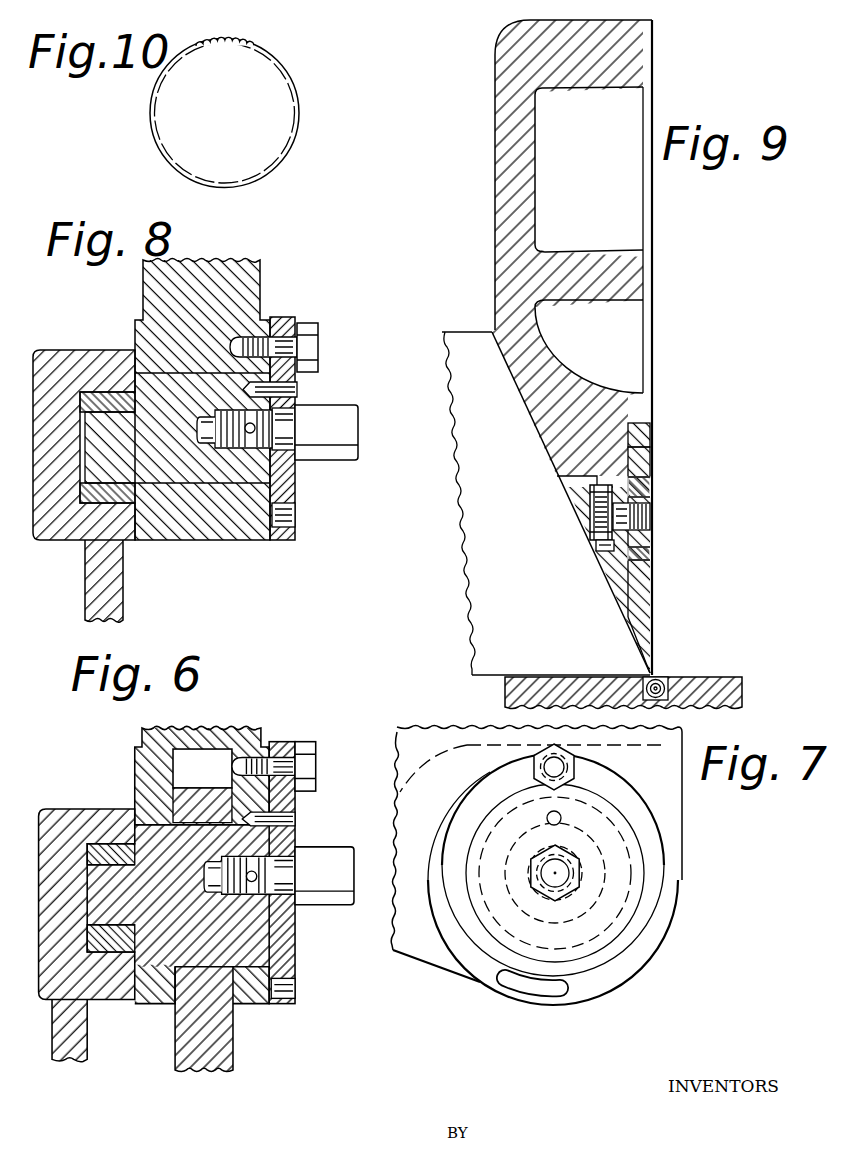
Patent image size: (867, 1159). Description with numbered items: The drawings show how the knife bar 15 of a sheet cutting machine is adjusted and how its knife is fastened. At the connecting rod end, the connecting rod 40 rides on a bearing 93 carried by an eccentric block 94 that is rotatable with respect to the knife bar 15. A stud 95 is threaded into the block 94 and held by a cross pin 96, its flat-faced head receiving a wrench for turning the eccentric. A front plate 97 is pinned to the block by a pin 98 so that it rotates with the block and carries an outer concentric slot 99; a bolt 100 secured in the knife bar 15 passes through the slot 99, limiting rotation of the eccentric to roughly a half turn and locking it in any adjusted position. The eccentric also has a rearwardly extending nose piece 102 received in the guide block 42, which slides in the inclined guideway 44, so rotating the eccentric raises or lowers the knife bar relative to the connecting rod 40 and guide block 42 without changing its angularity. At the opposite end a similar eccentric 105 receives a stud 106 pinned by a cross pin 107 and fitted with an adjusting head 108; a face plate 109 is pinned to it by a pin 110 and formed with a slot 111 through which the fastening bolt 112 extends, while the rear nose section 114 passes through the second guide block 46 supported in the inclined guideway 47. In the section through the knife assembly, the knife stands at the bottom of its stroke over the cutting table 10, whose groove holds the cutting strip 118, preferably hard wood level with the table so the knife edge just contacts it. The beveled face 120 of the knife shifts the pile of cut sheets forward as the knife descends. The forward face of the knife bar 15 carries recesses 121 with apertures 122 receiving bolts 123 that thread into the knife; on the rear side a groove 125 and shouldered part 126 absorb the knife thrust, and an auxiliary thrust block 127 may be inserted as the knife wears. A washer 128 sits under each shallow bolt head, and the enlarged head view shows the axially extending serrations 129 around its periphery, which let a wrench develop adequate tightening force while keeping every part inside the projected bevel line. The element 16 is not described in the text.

In FIG. 9, the cutting table 10 is at (715, 680).
In FIG. 8, the knife bar 15 is at (248, 283).
In FIG. 6, the knife bar 15 is at (167, 727).
In FIG. 9, the knife bar 15 is at (502, 168).
In FIG. 7, the knife bar 15 is at (675, 826).
In FIG. 9, the tapered member 16 is at (643, 598).
In FIG. 6, the connecting rod 40 is at (210, 1023).
In FIG. 6, the guide block 42 is at (97, 835).
In FIG. 6, the inclined guideway 44 is at (60, 1027).
In FIG. 8, the second guide block 46 is at (100, 500).
In FIG. 8, the inclined guideway 47 is at (113, 590).
In FIG. 6, the bearing 93 is at (178, 952).
In FIG. 6, the eccentric block 94 is at (245, 923).
In FIG. 7, the eccentric block 94 is at (590, 912).
In FIG. 6, the stud 95 is at (310, 843).
In FIG. 7, the stud 95 is at (555, 902).
In FIG. 6, the cross pin 96 is at (247, 867).
In FIG. 6, the front plate 97 is at (273, 942).
In FIG. 7, the front plate 97 is at (615, 800).
In FIG. 6, the pin 98 is at (283, 808).
In FIG. 7, the pin 98 is at (559, 813).
In FIG. 6, the concentric slot 99 is at (283, 972).
In FIG. 7, the concentric slot 99 is at (505, 975).
In FIG. 6, the bolt 100 is at (295, 740).
In FIG. 7, the bolt 100 is at (574, 766).
In FIG. 6, the nose piece 102 is at (107, 907).
In FIG. 7, the nose piece 102 is at (533, 920).
In FIG. 8, the eccentric 105 is at (188, 470).
In FIG. 8, the stud 106 is at (288, 420).
In FIG. 8, the cross pin 107 is at (252, 427).
In FIG. 8, the adjusting head 108 is at (347, 452).
In FIG. 8, the face plate 109 is at (297, 495).
In FIG. 8, the pin 110 is at (295, 383).
In FIG. 8, the slot 111 is at (293, 520).
In FIG. 8, the fastening bolt 112 is at (312, 342).
In FIG. 8, the rear nose section 114 is at (103, 420).
In FIG. 9, the cutting strip 118 is at (660, 677).
In FIG. 9, the beveled face 120 is at (637, 648).
In FIG. 9, the recesses 121 is at (597, 492).
In FIG. 9, the apertures 122 is at (650, 550).
In FIG. 9, the bolts 123 is at (650, 522).
In FIG. 9, the groove 125 is at (637, 447).
In FIG. 9, the shouldered part 126 is at (648, 410).
In FIG. 9, the auxiliary thrust block 127 is at (643, 430).
In FIG. 9, the washer 128 is at (610, 541).
In FIG. 10, the serrations 129 is at (246, 42).
In FIG. 9, the serrations 129 is at (600, 527).